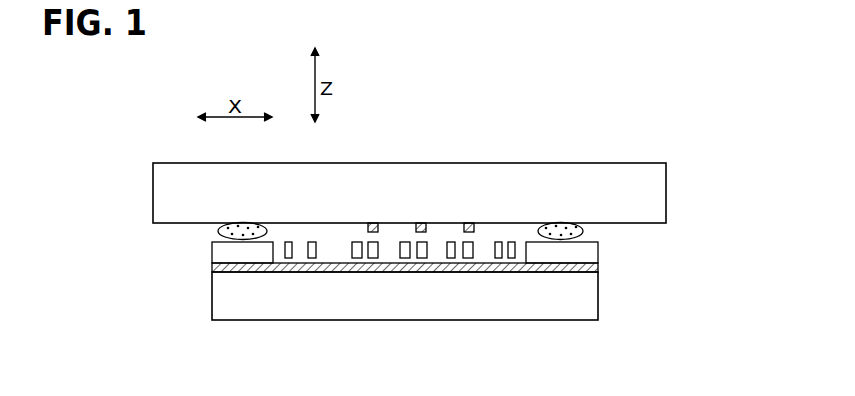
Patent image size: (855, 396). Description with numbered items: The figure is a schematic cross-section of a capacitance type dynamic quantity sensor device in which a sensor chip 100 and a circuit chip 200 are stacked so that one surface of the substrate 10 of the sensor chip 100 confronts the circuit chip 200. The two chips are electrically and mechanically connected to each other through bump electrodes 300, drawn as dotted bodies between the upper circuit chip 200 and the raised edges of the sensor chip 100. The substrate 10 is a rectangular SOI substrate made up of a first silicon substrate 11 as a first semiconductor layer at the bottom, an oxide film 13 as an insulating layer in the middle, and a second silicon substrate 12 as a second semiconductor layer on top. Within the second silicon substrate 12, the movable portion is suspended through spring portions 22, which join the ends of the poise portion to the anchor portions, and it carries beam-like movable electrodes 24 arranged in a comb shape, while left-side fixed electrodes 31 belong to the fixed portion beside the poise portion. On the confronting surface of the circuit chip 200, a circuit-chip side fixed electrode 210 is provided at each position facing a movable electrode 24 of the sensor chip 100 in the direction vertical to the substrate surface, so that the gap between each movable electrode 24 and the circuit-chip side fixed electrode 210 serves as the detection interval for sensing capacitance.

The sensor chip 100 is at (413, 237).
The substrate 10 is at (456, 281).
The first silicon substrate 11 is at (592, 292).
The second silicon substrate 12 is at (592, 253).
The oxide film 13 is at (592, 270).
The spring portions 22 is at (498, 250).
The movable electrodes 24 is at (468, 255).
The left-side fixed electrodes 31 is at (450, 255).
The circuit chip 200 is at (660, 197).
The circuit-chip side fixed electrode 210 is at (372, 223).
The bump electrodes 300 is at (218, 232).